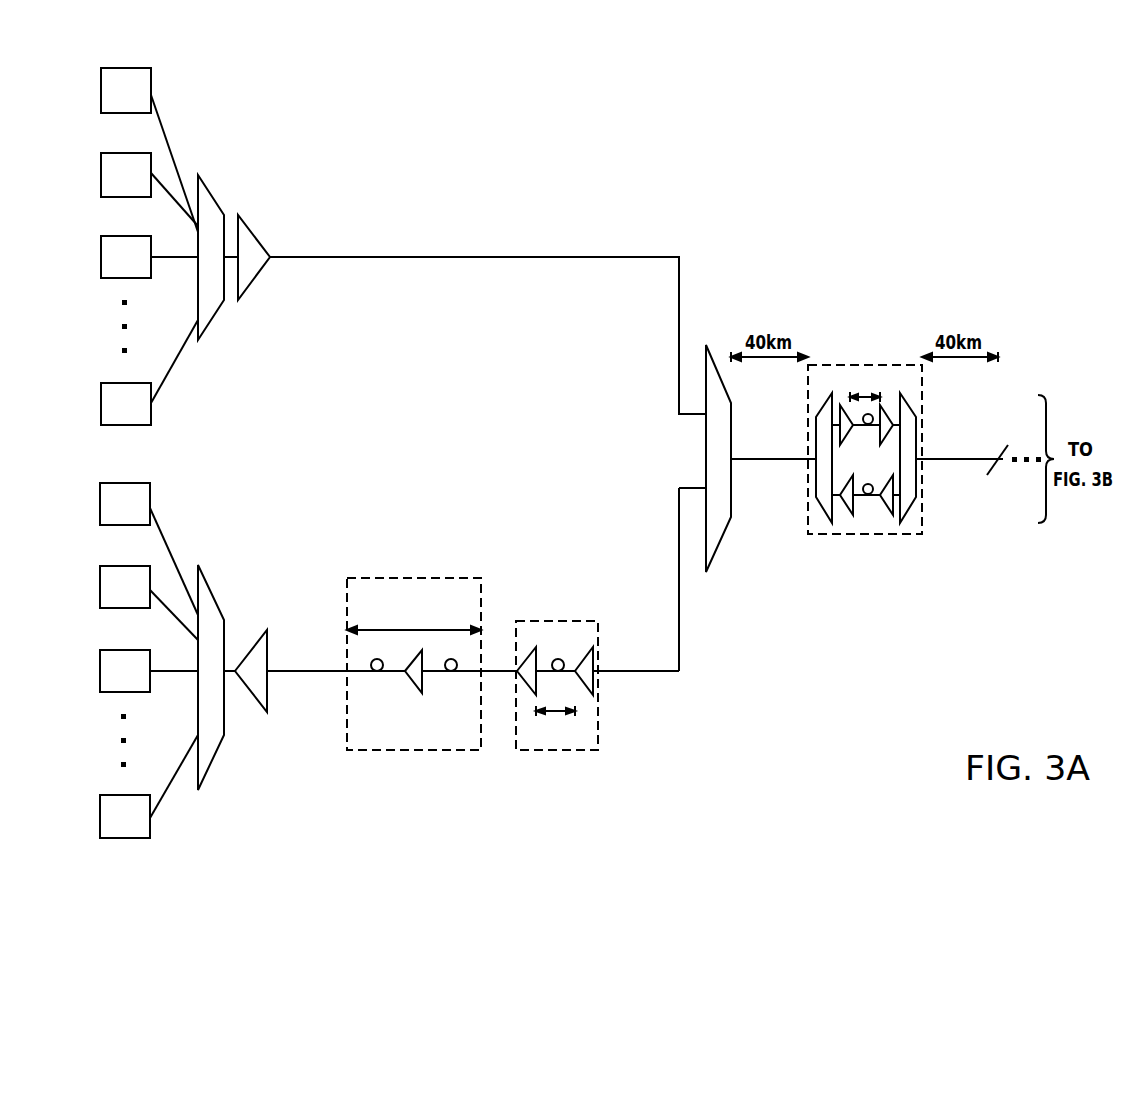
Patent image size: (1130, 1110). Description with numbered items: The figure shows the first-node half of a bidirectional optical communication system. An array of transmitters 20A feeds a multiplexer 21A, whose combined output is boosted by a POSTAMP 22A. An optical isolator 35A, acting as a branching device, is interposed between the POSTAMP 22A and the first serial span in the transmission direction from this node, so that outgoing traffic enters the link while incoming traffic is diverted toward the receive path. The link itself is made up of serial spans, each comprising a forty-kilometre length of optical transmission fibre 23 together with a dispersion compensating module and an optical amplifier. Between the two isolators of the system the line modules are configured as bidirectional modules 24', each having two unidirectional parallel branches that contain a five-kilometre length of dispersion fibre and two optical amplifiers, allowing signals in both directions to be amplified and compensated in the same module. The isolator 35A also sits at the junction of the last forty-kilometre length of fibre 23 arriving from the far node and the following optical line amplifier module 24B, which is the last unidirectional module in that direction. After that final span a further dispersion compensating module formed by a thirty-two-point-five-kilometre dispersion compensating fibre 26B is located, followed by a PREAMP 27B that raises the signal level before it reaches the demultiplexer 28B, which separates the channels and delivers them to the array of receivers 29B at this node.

The transmitter array 20A is at (96, 62).
The multiplexer 21A is at (207, 330).
The POSTAMP 22A is at (258, 238).
The optical isolator 35A is at (717, 362).
The optical transmission fibre 23 is at (771, 460).
The bidirectional module 24' is at (865, 480).
The receiver array 29B is at (95, 473).
The demultiplexer 28B is at (207, 770).
The PREAMP 27B is at (252, 650).
The dispersion compensating fibre 26B is at (421, 750).
The optical line amplifier module 24B is at (550, 750).